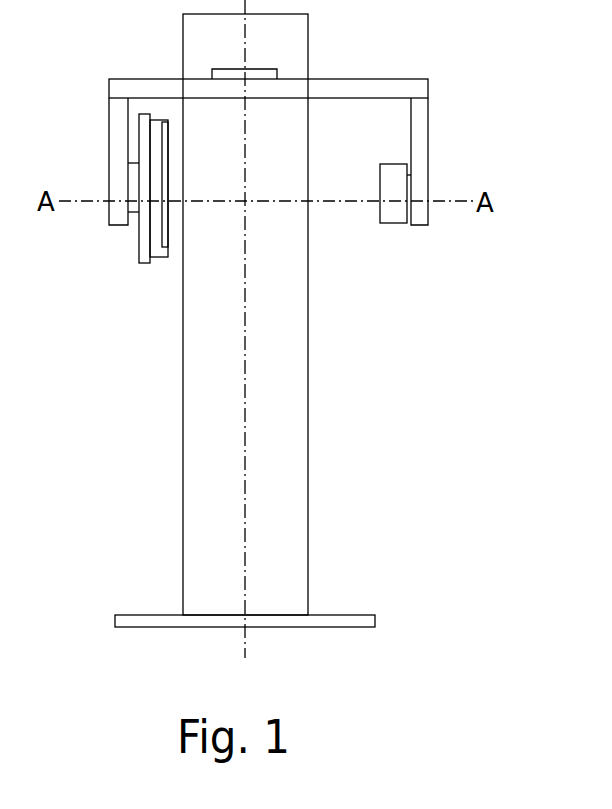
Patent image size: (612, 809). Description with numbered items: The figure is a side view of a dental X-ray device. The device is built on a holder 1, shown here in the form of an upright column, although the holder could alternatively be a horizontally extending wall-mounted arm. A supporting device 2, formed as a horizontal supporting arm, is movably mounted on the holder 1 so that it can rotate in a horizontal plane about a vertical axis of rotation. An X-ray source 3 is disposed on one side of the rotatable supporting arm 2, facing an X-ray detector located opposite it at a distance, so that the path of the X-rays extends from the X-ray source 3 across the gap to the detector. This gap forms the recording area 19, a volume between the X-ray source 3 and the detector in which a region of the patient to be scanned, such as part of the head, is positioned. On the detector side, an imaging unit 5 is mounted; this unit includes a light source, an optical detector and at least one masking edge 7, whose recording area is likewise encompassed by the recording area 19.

The holder 1 is at (292, 282).
The supporting device 2 is at (393, 72).
The X-ray source 3 is at (400, 207).
The imaging unit 5 is at (158, 146).
The masking edge 7 is at (164, 132).
The recording area 19 is at (323, 170).